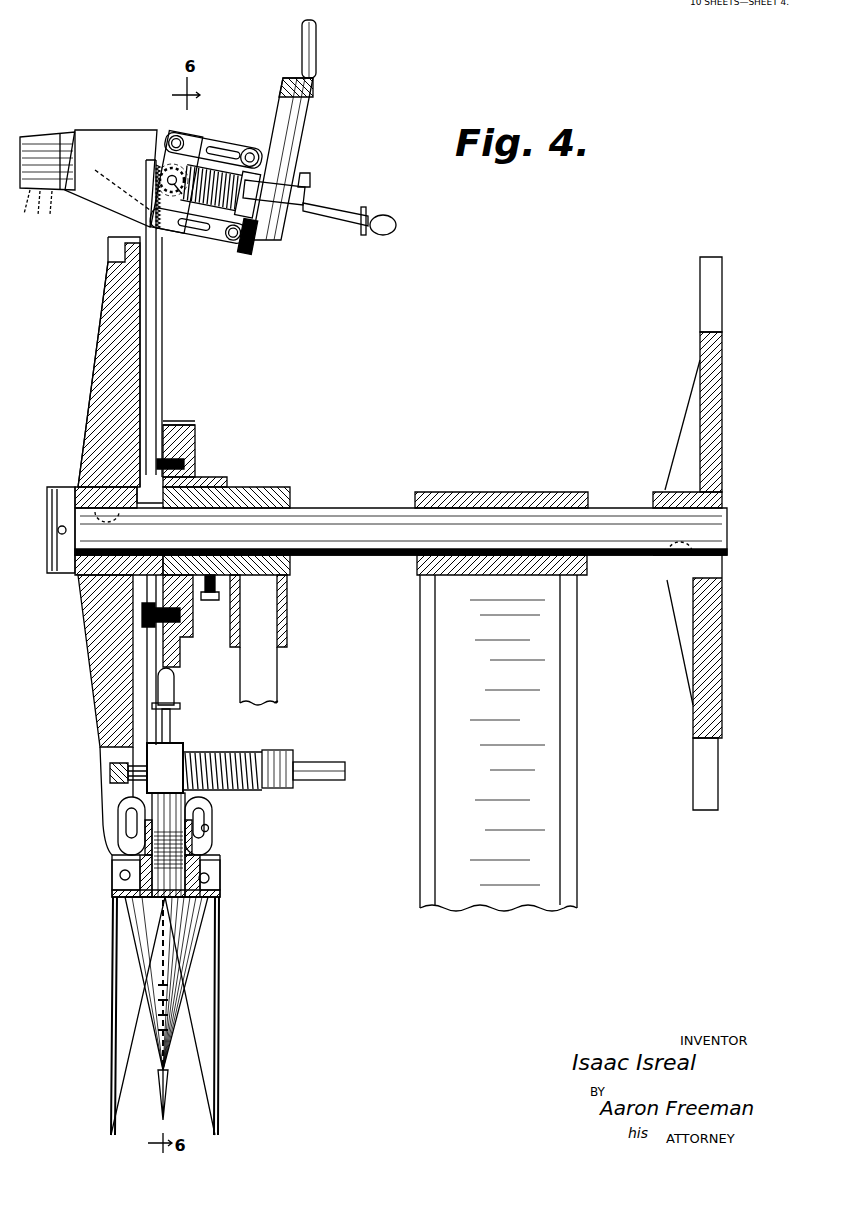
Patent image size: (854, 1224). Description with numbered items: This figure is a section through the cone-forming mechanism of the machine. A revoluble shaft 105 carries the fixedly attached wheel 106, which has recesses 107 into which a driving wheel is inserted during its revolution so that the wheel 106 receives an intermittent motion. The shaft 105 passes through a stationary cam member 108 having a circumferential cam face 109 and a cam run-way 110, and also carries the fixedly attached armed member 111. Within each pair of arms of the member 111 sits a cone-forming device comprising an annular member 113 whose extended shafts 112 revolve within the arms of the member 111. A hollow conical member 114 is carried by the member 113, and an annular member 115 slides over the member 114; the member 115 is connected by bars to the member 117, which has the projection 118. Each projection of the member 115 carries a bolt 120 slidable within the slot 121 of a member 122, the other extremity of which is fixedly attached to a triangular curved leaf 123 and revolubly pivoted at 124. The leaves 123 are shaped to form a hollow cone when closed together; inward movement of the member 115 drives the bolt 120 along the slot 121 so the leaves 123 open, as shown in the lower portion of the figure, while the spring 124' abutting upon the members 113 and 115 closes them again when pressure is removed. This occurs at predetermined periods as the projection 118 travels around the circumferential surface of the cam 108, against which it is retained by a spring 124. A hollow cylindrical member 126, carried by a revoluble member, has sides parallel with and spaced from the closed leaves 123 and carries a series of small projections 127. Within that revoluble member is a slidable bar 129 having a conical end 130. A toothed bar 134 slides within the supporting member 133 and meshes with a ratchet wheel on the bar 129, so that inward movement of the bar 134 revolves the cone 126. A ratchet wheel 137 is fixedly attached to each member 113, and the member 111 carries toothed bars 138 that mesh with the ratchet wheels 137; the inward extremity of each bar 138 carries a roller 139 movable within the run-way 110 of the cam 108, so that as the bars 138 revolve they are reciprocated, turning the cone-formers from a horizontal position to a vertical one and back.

The revoluble shaft 105 is at (340, 522).
The wheel 106 is at (712, 387).
The recesses 107 is at (718, 297).
The stationary cam member 108 is at (195, 441).
The circumferential cam face 109 is at (180, 426).
The cam run-way 110 is at (182, 466).
The armed member 111 is at (100, 404).
The extended shafts 112 is at (188, 195).
The annular member 113 is at (162, 148).
The hollow conical member 114 is at (82, 205).
The annular member 115 is at (130, 857).
The member 117 is at (365, 236).
The projection 118 is at (388, 224).
The bolt 120 is at (251, 152).
The slot 121 is at (228, 238).
The member 122 is at (205, 136).
The triangular curved leaf 123 is at (97, 170).
The pivot 124 is at (195, 502).
The spring 124' is at (230, 547).
The hollow cylindrical member 126 is at (48, 140).
The small projections 127 is at (42, 195).
The slidable bar 129 is at (160, 1072).
The conical end 130 is at (162, 1092).
The supporting member 133 is at (300, 132).
The toothed bar 134 is at (318, 42).
The ratchet wheel 137 is at (157, 176).
The toothed bars 138 is at (153, 338).
The roller 139 is at (222, 483).